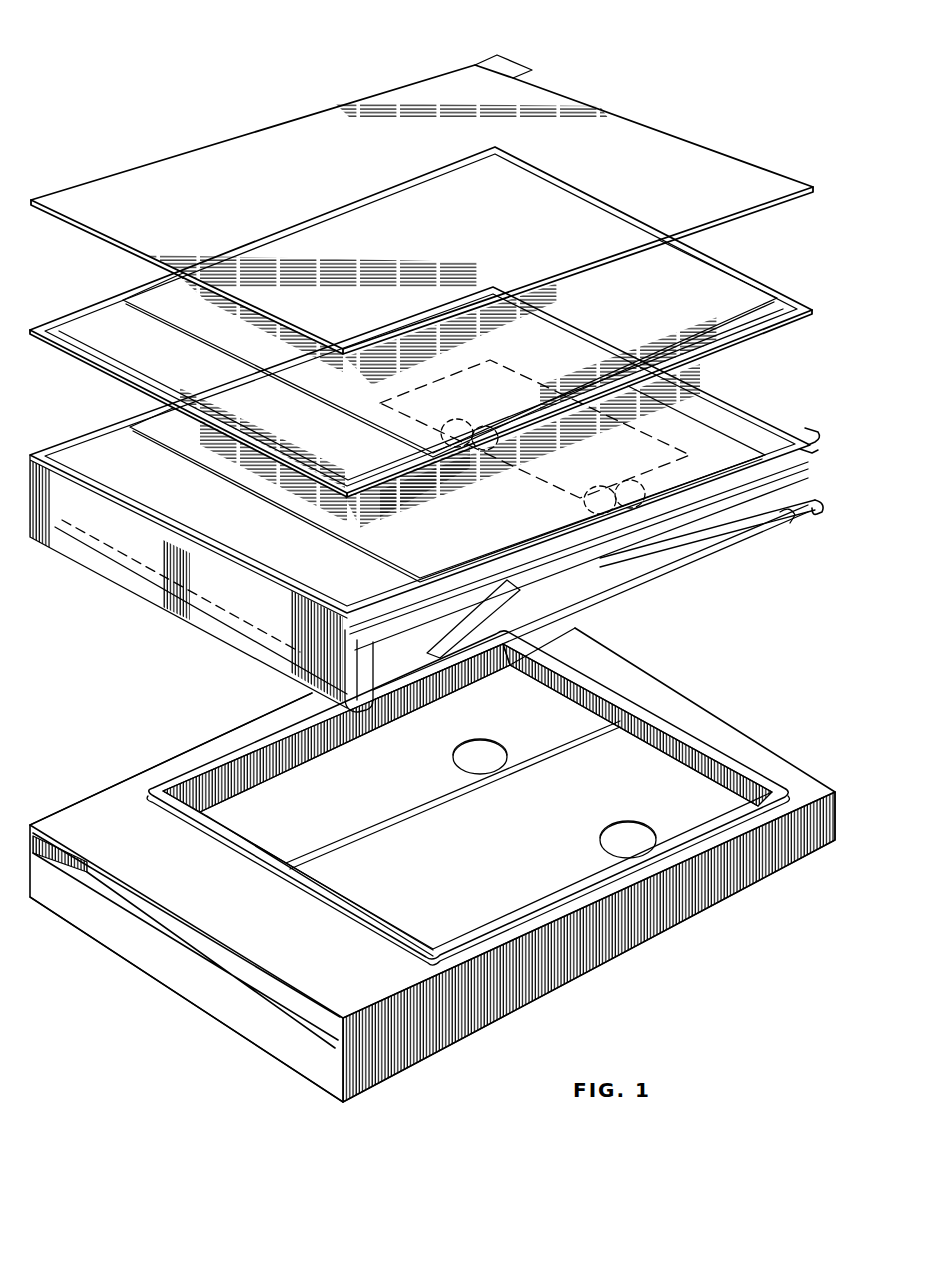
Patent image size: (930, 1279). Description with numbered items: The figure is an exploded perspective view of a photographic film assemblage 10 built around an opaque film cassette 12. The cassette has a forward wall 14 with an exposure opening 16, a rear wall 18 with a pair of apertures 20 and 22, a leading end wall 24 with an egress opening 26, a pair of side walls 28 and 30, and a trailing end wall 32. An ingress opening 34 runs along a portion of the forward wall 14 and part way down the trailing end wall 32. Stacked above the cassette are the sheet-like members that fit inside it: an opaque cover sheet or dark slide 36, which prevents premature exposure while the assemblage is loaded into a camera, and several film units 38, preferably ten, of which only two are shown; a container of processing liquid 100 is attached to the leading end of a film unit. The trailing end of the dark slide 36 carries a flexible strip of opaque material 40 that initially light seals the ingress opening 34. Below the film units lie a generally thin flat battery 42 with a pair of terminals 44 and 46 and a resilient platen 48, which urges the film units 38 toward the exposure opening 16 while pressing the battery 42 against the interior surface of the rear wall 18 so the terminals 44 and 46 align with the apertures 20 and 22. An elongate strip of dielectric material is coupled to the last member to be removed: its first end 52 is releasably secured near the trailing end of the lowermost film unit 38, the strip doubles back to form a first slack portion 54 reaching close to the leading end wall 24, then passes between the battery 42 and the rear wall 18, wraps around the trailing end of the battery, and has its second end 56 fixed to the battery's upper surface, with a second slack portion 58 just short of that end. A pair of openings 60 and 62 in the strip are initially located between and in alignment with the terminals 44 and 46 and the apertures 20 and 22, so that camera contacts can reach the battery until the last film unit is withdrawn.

The photographic film assemblage 10 is at (203, 115).
The film cassette 12 is at (432, 862).
The forward wall 14 is at (108, 805).
The exposure opening 16 is at (218, 757).
The rear wall 18 is at (410, 838).
The aperture 20 is at (453, 760).
The aperture 22 is at (620, 840).
The leading end wall 24 is at (285, 1050).
The egress opening 26 is at (186, 932).
The side wall 28 is at (240, 770).
The side wall 30 is at (522, 990).
The trailing end wall 32 is at (668, 705).
The ingress opening 34 is at (532, 644).
The dark slide 36 is at (335, 108).
The film unit 38 is at (748, 410).
The flexible strip of opaque material 40 is at (514, 72).
The battery 42 is at (582, 563).
The battery terminal 44 is at (462, 419).
The battery terminal 46 is at (590, 494).
The resilient platen 48 is at (478, 604).
The first end of elongate strip 52 is at (812, 432).
The first slack portion 54 is at (698, 500).
The second end of elongate strip 56 is at (782, 526).
The second slack portion 58 is at (818, 504).
The opening in strip 60 is at (485, 426).
The opening in strip 62 is at (620, 482).
The container of processing liquid 100 is at (330, 414).